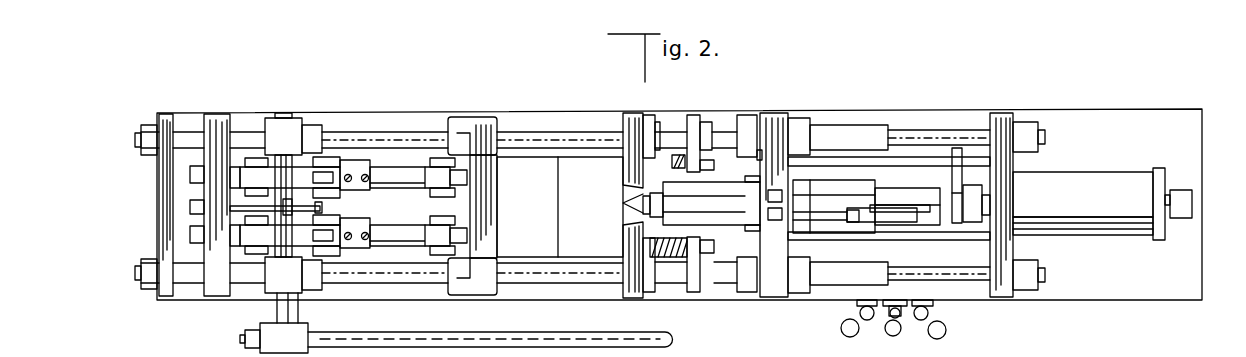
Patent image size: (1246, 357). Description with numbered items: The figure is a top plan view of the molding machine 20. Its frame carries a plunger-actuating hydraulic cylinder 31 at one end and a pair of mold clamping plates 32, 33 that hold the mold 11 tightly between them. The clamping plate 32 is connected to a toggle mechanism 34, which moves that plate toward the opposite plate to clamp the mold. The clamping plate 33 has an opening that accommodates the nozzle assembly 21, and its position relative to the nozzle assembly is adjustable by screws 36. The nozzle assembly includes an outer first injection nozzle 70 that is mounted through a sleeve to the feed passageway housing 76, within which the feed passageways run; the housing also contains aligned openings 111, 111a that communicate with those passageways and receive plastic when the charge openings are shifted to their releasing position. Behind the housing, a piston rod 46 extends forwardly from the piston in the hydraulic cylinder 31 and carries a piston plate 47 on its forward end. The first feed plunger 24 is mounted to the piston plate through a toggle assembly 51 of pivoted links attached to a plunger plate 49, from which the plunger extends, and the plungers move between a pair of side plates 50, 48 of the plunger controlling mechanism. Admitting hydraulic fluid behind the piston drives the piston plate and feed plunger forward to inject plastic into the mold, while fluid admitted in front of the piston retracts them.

The molding machine 20 is at (1099, 104).
The toggle mechanism 34 is at (356, 222).
The clamping plate 32 is at (486, 140).
The mold 11 is at (526, 185).
The clamping plate 33 is at (628, 137).
The nozzle assembly 21 is at (653, 180).
The screws 36 is at (677, 166).
The first injection nozzle 70 is at (633, 197).
The feed passageway housing 76 is at (711, 203).
The opening 111a is at (776, 190).
The opening 111 is at (776, 222).
The first feed plunger 24 is at (832, 235).
The side plate 50 is at (918, 197).
The toggle assembly 51 is at (886, 208).
The side plate 48 is at (884, 222).
The plunger plate 49 is at (863, 222).
The piston plate 47 is at (957, 150).
The piston rod 46 is at (1000, 198).
The hydraulic cylinder 31 is at (1100, 185).